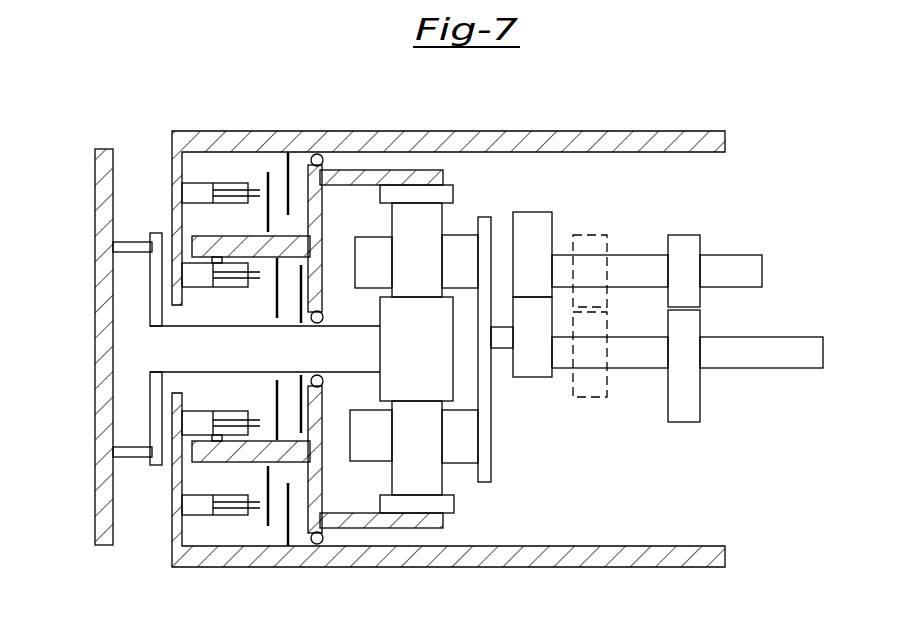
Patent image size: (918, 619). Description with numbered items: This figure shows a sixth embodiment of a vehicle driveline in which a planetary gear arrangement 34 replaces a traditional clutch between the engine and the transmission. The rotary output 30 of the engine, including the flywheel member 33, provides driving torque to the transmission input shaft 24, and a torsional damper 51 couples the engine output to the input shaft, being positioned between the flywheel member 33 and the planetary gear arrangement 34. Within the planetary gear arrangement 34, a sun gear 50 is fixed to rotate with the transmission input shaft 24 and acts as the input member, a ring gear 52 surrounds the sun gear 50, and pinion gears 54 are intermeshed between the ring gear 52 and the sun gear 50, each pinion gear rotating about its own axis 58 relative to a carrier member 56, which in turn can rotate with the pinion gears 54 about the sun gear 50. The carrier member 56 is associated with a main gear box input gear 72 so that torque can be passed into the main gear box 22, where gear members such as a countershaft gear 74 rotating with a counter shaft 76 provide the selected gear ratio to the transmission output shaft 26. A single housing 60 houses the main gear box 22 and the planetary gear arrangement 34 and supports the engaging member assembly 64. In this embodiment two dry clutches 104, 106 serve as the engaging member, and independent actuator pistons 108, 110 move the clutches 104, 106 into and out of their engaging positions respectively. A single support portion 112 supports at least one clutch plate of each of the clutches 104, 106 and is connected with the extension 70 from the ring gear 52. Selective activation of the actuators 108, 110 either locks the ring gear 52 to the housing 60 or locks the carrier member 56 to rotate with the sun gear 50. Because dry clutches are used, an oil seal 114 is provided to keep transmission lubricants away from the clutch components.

The main gear box 22 is at (652, 132).
The transmission input shaft 24 is at (284, 361).
The transmission output shaft 26 is at (763, 343).
The rotary output 30 is at (85, 413).
The flywheel member 33 is at (95, 507).
The planetary gear arrangement 34 is at (361, 127).
The sun gear 50 is at (430, 361).
The torsional damper 51 is at (158, 466).
The ring gear 52 is at (457, 205).
The pinion gears 54 is at (435, 262).
The carrier member 56 is at (485, 461).
The axis 58 is at (389, 278).
The housing 60 is at (562, 132).
The engaging member assembly 64 is at (197, 122).
The extension 70 is at (385, 175).
The main gear box input gear 72 is at (533, 370).
The countershaft gear 74 is at (552, 215).
The counter shaft 76 is at (718, 262).
The dry clutch 104 is at (265, 303).
The dry clutch 106 is at (276, 170).
The actuator piston 108 is at (197, 275).
The actuator piston 110 is at (195, 185).
The support portion 112 is at (243, 243).
The oil seal 114 is at (320, 154).